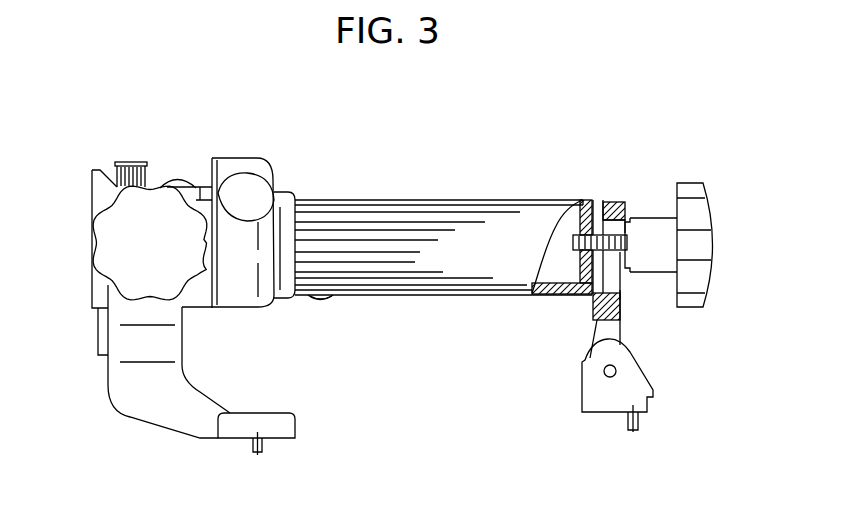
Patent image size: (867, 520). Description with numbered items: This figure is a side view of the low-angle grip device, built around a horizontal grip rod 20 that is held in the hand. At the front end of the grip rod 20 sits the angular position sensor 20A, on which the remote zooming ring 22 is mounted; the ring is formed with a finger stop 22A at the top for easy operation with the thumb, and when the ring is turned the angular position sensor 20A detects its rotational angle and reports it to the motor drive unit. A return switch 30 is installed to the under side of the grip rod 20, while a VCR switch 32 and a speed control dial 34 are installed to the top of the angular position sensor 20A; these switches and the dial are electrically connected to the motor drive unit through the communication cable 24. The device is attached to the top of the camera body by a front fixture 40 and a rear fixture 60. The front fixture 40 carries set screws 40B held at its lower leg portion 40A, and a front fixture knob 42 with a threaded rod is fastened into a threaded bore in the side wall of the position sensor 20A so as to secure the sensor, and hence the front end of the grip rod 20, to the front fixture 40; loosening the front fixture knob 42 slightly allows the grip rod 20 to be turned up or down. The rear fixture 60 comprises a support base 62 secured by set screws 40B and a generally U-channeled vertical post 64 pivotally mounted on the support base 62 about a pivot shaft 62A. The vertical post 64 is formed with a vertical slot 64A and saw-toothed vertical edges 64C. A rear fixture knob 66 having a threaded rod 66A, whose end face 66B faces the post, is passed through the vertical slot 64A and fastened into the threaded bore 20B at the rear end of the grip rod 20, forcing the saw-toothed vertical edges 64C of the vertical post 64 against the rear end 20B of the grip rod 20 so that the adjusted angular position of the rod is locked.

The grip rod 20 is at (422, 200).
The angular position sensor 20A is at (92, 297).
The threaded bore at rear end of grip rod 20B is at (574, 238).
The remote zooming ring 22 is at (233, 160).
The finger stop 22A is at (262, 190).
The communication cable 24 is at (100, 356).
The return switch 30 is at (331, 298).
The VCR switch 32 is at (184, 177).
The speed control dial 34 is at (131, 162).
The front fixture 40 is at (130, 416).
The lower leg portion 40A is at (295, 430).
The set screws 40B is at (260, 443).
The front fixture knob 42 is at (103, 217).
The rear fixture 60 is at (668, 353).
The support base 62 is at (654, 391).
The pivot shaft 62A is at (605, 376).
The vertical post 64 is at (620, 205).
The vertical slot 64A is at (600, 297).
The saw-toothed vertical edges 64C is at (603, 277).
The rear fixture knob 66 is at (720, 243).
The threaded rod 66A is at (628, 222).
The end face 66B is at (575, 235).